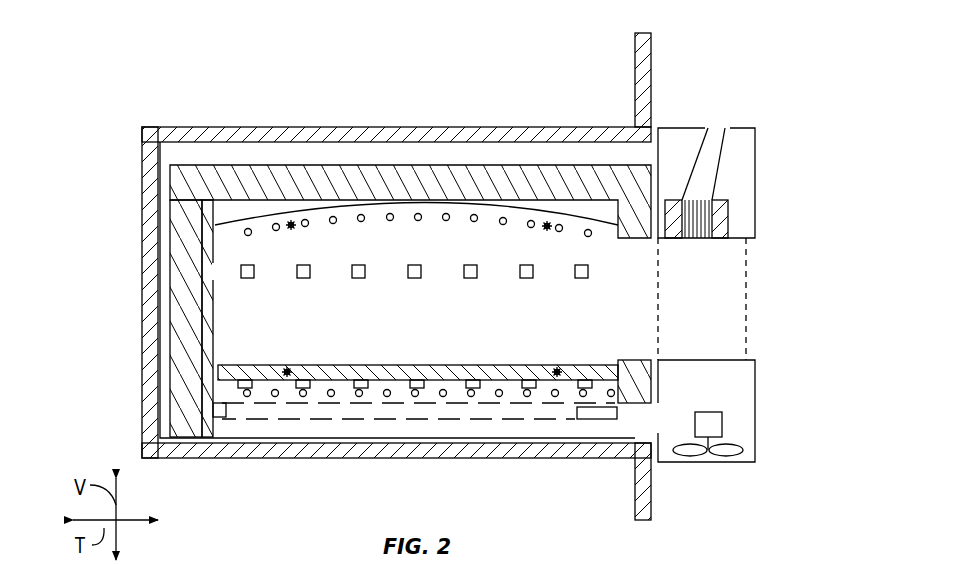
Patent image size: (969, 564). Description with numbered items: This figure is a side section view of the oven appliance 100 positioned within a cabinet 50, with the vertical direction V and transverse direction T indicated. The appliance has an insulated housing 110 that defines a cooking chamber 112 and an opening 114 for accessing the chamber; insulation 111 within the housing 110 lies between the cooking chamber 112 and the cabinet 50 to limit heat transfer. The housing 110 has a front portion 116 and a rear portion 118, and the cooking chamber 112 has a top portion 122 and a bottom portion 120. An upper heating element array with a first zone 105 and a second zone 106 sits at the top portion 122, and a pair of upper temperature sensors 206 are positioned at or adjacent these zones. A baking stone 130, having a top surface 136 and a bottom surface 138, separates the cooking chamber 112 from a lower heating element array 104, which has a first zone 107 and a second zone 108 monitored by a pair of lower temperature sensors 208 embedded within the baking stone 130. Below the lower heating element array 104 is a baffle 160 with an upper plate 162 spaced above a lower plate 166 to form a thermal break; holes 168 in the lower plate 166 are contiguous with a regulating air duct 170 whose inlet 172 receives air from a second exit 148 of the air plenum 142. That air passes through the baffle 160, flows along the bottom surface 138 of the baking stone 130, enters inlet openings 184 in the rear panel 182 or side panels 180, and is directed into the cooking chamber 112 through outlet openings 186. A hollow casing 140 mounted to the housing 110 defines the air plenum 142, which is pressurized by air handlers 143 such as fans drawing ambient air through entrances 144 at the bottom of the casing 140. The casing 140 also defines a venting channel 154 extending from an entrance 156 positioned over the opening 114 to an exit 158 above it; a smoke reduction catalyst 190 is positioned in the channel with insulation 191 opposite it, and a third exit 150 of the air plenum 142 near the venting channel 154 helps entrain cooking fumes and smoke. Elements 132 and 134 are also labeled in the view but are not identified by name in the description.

The cabinet 50 is at (652, 43).
The oven appliance 100 is at (168, 155).
The lower heating element array 104 is at (420, 388).
The first zone 105 is at (504, 216).
The second zone 106 is at (306, 219).
The first zone 107 is at (522, 400).
The second zone 108 is at (303, 400).
The housing 110 is at (170, 243).
The insulation 111 is at (178, 355).
The cooking chamber 112 is at (607, 325).
The opening 114 is at (662, 350).
The front portion 116 is at (608, 160).
The rear portion 118 is at (211, 160).
The bottom portion 120 is at (230, 355).
The top portion 122 is at (212, 217).
The baking stone 130 is at (440, 366).
The panel edge 132 is at (535, 365).
The bottom plate 134 is at (325, 365).
The top surface 136 is at (254, 364).
The bottom surface 138 is at (232, 386).
The casing 140 is at (756, 190).
The air plenum 142 is at (736, 165).
The air handlers 143 is at (745, 450).
The entrances 144 is at (713, 470).
The second exit 148 is at (662, 413).
The third exit 150 is at (675, 125).
The venting channel 154 is at (717, 128).
The entrance 156 is at (697, 244).
The exit 158 is at (727, 124).
The baffle 160 is at (213, 412).
The upper plate 162 is at (412, 213).
The lower plate 166 is at (507, 404).
The holes 168 is at (362, 419).
The regulating air duct 170 is at (278, 432).
The inlet 172 is at (637, 440).
The side panels 180 is at (640, 292).
The rear panel 182 is at (215, 248).
The inlet openings 184 is at (213, 388).
The outlet openings 186 is at (216, 275).
The smoke reduction catalyst 190 is at (705, 218).
The insulation 191 is at (722, 225).
The upper temperature sensors 206 is at (291, 230).
The lower temperature sensors 208 is at (287, 368).